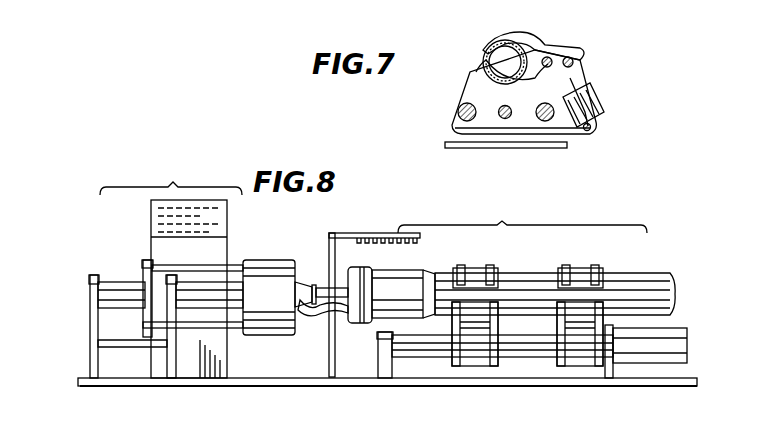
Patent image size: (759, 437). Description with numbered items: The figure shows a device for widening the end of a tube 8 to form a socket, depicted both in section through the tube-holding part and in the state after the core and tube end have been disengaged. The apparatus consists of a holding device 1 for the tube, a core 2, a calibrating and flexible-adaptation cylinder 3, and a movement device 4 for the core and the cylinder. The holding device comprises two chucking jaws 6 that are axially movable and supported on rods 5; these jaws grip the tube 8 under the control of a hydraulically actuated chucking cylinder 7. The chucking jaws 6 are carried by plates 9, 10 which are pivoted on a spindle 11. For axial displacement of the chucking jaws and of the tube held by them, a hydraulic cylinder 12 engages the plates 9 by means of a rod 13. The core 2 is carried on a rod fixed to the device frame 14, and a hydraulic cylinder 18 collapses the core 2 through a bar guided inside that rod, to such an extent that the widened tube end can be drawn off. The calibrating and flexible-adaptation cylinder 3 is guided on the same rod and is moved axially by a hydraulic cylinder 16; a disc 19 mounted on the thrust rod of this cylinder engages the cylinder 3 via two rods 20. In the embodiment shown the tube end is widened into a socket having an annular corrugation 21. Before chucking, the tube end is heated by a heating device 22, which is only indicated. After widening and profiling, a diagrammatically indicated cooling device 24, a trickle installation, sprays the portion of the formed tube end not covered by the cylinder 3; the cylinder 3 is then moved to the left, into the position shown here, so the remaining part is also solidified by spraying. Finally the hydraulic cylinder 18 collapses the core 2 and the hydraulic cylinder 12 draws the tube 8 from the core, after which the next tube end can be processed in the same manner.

In FIG. 8, the holding device 1 is at (522, 215).
In FIG. 8, the core 2 is at (303, 280).
In FIG. 8, the calibrating and flexible-adaptation cylinder 3 is at (258, 268).
In FIG. 8, the movement device 4 is at (171, 175).
In FIG. 7, the rods 5 is at (458, 112).
In FIG. 8, the rods 5 is at (528, 353).
In FIG. 7, the chucking jaws 6 is at (492, 43).
In FIG. 8, the chucking jaws 6 is at (548, 285).
In FIG. 7, the chucking cylinder 7 is at (604, 100).
In FIG. 7, the tube 8 is at (484, 62).
In FIG. 8, the tube 8 is at (428, 270).
In FIG. 7, the plates 9 is at (482, 120).
In FIG. 8, the plates 9 is at (456, 366).
In FIG. 7, the plates 10 is at (549, 57).
In FIG. 8, the plates 10 is at (461, 265).
In FIG. 7, the spindle 11 is at (571, 58).
In FIG. 8, the hydraulic cylinder 12 is at (687, 345).
In FIG. 7, the rod 13 is at (505, 119).
In FIG. 8, the device frame 14 is at (287, 382).
In FIG. 8, the hydraulic cylinder 16 is at (128, 280).
In FIG. 8, the hydraulic cylinder 18 is at (198, 310).
In FIG. 8, the disc 19 is at (143, 325).
In FIG. 8, the rods 20 is at (233, 330).
In FIG. 8, the annular corrugation 21 is at (363, 322).
In FIG. 8, the heating device 22 is at (150, 215).
In FIG. 8, the cooling device 24 is at (363, 235).